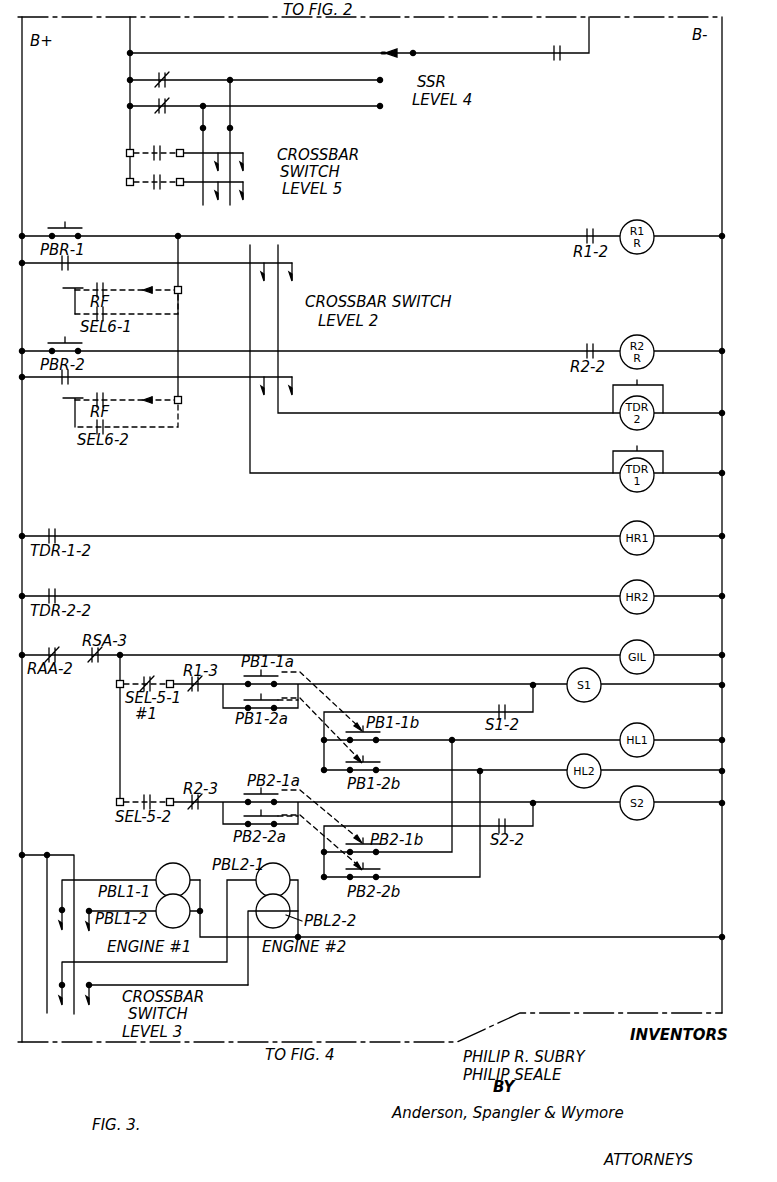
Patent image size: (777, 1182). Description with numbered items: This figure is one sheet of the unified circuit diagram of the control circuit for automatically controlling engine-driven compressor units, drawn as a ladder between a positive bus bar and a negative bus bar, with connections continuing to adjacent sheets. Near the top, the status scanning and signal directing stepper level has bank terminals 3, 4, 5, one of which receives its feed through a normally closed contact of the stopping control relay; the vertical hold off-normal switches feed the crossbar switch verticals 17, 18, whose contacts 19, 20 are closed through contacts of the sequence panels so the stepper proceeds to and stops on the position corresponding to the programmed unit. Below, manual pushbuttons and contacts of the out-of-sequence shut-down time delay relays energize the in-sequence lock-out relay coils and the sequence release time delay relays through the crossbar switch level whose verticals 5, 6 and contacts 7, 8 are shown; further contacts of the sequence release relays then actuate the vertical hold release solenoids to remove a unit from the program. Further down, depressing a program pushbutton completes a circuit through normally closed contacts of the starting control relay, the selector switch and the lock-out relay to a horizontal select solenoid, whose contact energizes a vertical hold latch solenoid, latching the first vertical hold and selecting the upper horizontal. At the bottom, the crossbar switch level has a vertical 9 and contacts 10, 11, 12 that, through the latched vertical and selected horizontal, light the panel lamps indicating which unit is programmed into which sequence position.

The SSR level 4 terminal 3 is at (358, 48).
The SSR level 4 terminal 4 is at (259, 87).
The SSR level 4 terminal 5 / crossbar switch level 2 vertical 5 is at (424, 285).
The crossbar switch level 2 vertical 6 is at (501, 330).
The crossbar switch level 2 contact 7 is at (163, 272).
The crossbar switch level 2 contact 8 is at (162, 386).
The crossbar switch level 3 vertical 9 is at (46, 933).
The crossbar switch level 3 contact 10 is at (129, 918).
The crossbar switch level 3 contact 11 is at (143, 921).
The crossbar switch level 3 contact 12 is at (167, 996).
The crossbar switch level 5 vertical 17 is at (212, 155).
The crossbar switch level 5 vertical 18 is at (240, 142).
The crossbar switch level 5 contact 19 is at (197, 161).
The crossbar switch level 5 contact 20 is at (197, 190).